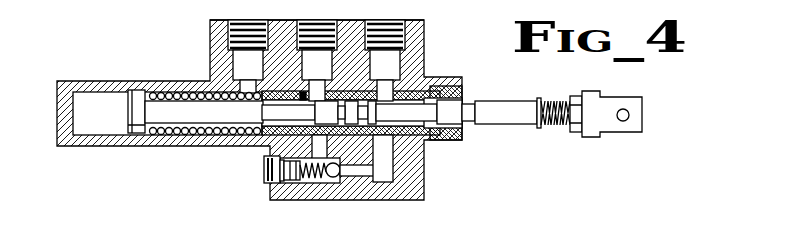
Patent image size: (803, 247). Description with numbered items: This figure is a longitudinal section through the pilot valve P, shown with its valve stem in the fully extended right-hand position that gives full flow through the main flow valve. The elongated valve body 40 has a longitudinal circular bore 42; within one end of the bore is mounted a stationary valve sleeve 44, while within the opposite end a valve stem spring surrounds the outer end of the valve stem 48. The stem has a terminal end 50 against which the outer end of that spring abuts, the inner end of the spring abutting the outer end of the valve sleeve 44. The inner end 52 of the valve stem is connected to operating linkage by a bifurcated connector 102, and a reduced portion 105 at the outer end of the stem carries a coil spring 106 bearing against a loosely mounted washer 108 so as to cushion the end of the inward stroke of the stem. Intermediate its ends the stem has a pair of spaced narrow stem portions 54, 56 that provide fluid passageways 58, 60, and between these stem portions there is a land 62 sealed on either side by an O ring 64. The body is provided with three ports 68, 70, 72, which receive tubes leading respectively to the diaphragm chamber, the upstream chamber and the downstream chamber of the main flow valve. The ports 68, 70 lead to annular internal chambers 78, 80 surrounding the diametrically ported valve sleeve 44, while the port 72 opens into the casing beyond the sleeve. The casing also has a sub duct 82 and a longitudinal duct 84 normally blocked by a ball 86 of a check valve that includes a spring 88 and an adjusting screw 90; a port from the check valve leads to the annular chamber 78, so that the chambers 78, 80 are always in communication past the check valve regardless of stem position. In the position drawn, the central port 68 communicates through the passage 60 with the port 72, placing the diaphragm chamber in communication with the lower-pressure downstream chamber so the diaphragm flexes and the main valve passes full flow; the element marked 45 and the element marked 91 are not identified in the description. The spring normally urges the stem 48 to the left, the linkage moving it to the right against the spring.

The pilot valve P is at (433, 24).
The valve body 40 is at (255, 141).
The longitudinal circular bore 42 is at (118, 137).
The stationary valve sleeve 44 is at (462, 96).
The return spring 45 is at (222, 136).
The valve stem 48 is at (200, 120).
The terminal end 50 is at (136, 92).
The inner end of the valve stem 52 is at (512, 104).
The narrow stem portion 54 is at (425, 138).
The narrow stem portion 56 is at (282, 125).
The fluid passageway 58 is at (430, 100).
The fluid passageway 60 is at (290, 105).
The land 62 is at (336, 177).
The O ring 64 is at (341, 104).
The port 68 is at (317, 60).
The port 70 is at (385, 50).
The port 72 is at (248, 56).
The annular internal chamber 78 is at (304, 92).
The annular internal chamber 80 is at (390, 90).
The sub duct 82 is at (395, 176).
The longitudinal duct 84 is at (366, 178).
The ball 86 is at (312, 182).
The spring 88 is at (293, 182).
The adjusting screw 90 is at (268, 172).
The seal plate 91 is at (282, 182).
The bifurcated connector 102 is at (606, 96).
The reduced portion 105 is at (576, 96).
The coil spring 106 is at (552, 126).
The washer 108 is at (539, 128).